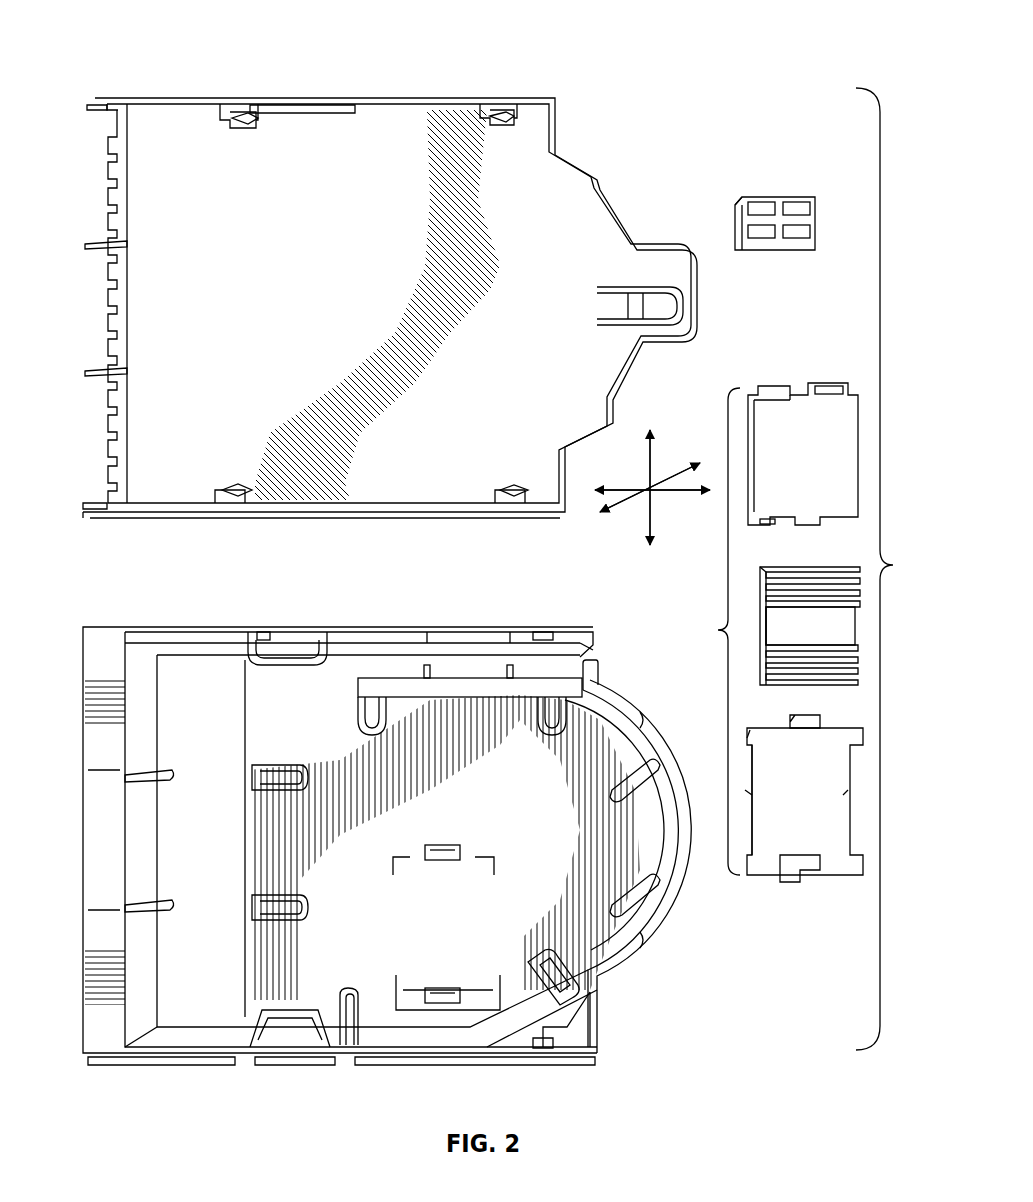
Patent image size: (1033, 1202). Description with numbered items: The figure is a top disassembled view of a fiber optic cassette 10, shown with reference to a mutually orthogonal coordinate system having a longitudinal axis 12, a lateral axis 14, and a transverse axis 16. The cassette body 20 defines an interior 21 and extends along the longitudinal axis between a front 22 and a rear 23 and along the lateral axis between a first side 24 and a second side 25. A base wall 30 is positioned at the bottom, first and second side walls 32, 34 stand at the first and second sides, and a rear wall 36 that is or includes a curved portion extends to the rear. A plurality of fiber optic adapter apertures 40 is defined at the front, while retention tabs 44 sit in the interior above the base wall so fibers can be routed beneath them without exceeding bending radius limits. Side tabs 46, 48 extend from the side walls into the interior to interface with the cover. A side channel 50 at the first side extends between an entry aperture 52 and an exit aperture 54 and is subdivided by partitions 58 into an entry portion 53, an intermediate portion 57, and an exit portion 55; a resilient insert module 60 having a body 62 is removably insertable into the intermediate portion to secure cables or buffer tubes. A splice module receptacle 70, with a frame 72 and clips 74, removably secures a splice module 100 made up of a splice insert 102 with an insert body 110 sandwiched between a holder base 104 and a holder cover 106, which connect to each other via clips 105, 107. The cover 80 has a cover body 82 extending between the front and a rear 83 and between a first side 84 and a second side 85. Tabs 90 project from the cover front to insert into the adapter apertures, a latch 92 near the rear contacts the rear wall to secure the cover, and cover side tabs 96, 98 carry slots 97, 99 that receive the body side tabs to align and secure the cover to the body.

The cassette 10 is at (901, 569).
The longitudinal axis 12 is at (625, 490).
The lateral axis 14 is at (652, 470).
The transverse axis 16 is at (625, 508).
The cassette body 20 is at (120, 612).
The interior 21 is at (378, 830).
The front 22 is at (80, 768).
The rear 23 is at (692, 800).
The first side 24 is at (345, 627).
The second side 25 is at (350, 1060).
The base wall 30 is at (238, 990).
The first side wall 32 is at (248, 630).
The second side wall 34 is at (180, 1066).
The rear wall 36 is at (690, 860).
The fiber optic adapter apertures 40 is at (140, 705).
The retention tabs 44 is at (615, 778).
The side tab 46 is at (265, 632).
The side tab 48 is at (285, 1050).
The side channel 50 is at (455, 640).
The entry aperture 52 is at (600, 652).
The entry portion 53 is at (540, 690).
The exit aperture 54 is at (352, 680).
The exit portion 55 is at (385, 690).
The intermediate portion 57 is at (465, 680).
The partitions 58 is at (427, 632).
The insert module 60 is at (795, 190).
The body 62 is at (808, 218).
The splice module receptacle 70 is at (405, 925).
The frame 72 is at (496, 865).
The clips 74 is at (450, 847).
The cover 80 is at (630, 160).
The cover body 82 is at (60, 115).
The rear 83 is at (708, 240).
The first side 84 is at (385, 90).
The second side 85 is at (400, 515).
The tabs 90 is at (100, 108).
The latch 92 is at (655, 300).
The side tab 96 is at (235, 108).
The slot 97 is at (245, 128).
The side tab 98 is at (225, 508).
The slot 99 is at (238, 486).
The splice module 100 is at (706, 631).
The splice insert 102 is at (880, 568).
The holder base 104 is at (855, 452).
The clips 105 is at (830, 383).
The holder cover 106 is at (850, 795).
The clips 107 is at (835, 732).
The insert body 110 is at (860, 630).